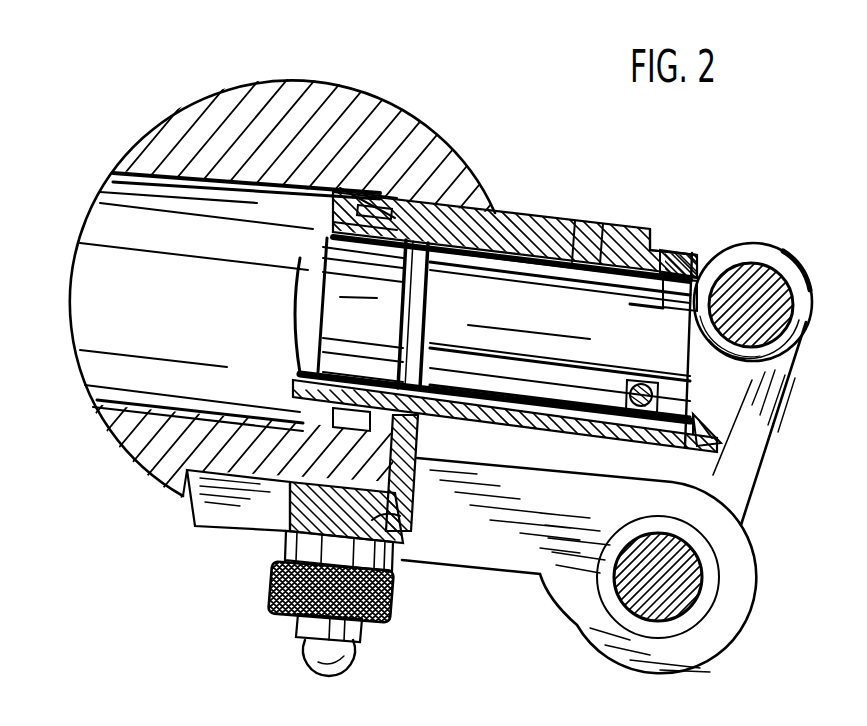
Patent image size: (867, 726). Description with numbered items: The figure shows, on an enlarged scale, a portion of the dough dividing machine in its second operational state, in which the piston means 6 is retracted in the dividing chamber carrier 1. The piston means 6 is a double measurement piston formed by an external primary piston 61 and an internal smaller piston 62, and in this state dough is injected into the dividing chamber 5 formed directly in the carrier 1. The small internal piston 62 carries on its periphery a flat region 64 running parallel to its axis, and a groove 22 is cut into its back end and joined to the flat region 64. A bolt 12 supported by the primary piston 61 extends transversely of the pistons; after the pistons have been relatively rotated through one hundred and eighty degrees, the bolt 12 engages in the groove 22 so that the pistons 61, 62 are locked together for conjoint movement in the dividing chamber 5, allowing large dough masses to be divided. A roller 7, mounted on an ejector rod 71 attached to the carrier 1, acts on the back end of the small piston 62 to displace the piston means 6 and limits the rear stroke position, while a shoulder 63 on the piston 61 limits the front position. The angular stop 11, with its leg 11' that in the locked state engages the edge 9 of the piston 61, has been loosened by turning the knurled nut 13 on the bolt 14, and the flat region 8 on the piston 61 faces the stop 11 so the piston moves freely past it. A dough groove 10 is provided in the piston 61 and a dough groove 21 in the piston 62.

The dividing chamber carrier 1 is at (183, 124).
The dividing chamber 5 is at (123, 198).
The piston means 6 is at (525, 203).
The roller 7 is at (754, 257).
The flat region 8 is at (500, 432).
The edge 9 is at (658, 240).
The dough groove 10 is at (327, 218).
The angular stop 11 is at (346, 487).
The leg 11' is at (407, 475).
The bolt 12 is at (633, 401).
The knurled nut 13 is at (270, 582).
The bolt 14 is at (305, 643).
The dough groove 21 is at (305, 369).
The groove 22 is at (660, 390).
The primary piston 61 is at (607, 240).
The internal piston 62 is at (637, 323).
The shoulder 63 is at (710, 437).
The flat region 64 is at (574, 232).
The ejector rod 71 is at (766, 266).